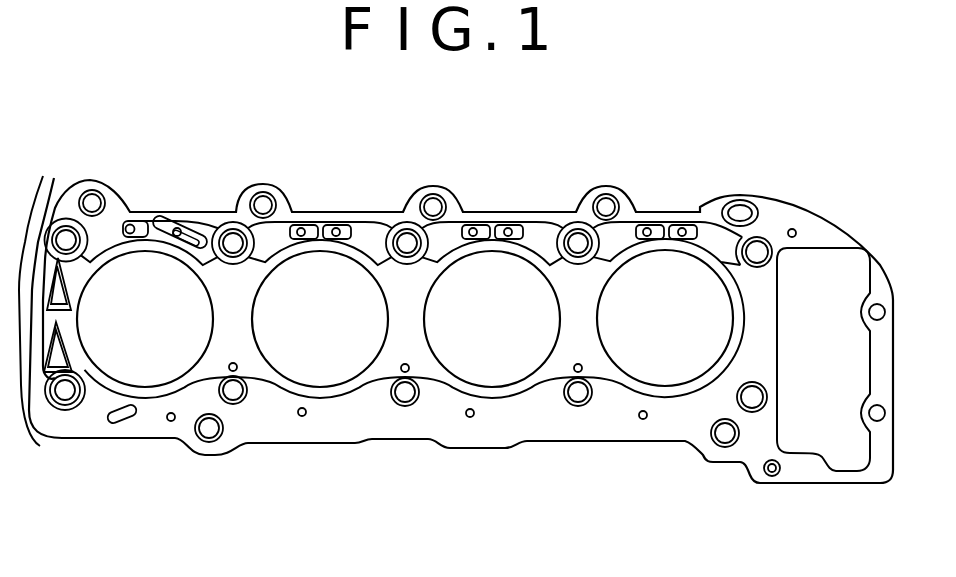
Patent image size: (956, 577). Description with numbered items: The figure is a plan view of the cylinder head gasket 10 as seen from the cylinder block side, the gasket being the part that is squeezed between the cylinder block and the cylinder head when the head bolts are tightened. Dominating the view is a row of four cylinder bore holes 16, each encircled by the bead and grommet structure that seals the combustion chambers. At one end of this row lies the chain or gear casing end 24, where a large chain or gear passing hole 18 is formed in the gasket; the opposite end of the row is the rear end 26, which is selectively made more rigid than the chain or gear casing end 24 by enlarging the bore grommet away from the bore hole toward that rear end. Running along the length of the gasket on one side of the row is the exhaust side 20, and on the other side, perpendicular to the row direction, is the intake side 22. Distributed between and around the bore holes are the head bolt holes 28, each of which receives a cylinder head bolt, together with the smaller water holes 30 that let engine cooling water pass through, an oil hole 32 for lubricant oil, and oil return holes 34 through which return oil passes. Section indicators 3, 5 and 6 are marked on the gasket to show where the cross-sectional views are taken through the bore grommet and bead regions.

The section line III-III 3 is at (236, 285).
The section line V-V 5 is at (580, 250).
The section line VI-VI 6 is at (414, 287).
The cylinder head gasket 10 is at (740, 196).
The cylinder bore hole 16 is at (139, 370).
The chain or gear passing hole 18 is at (838, 266).
The exhaust side 20 is at (462, 210).
The intake side 22 is at (468, 436).
The chain or gear casing end 24 is at (770, 303).
The rear end 26 is at (48, 295).
The head bolt holes 28 is at (234, 222).
The water holes 30 is at (68, 236).
The oil hole 32 is at (730, 205).
The oil return hole 34 is at (93, 200).